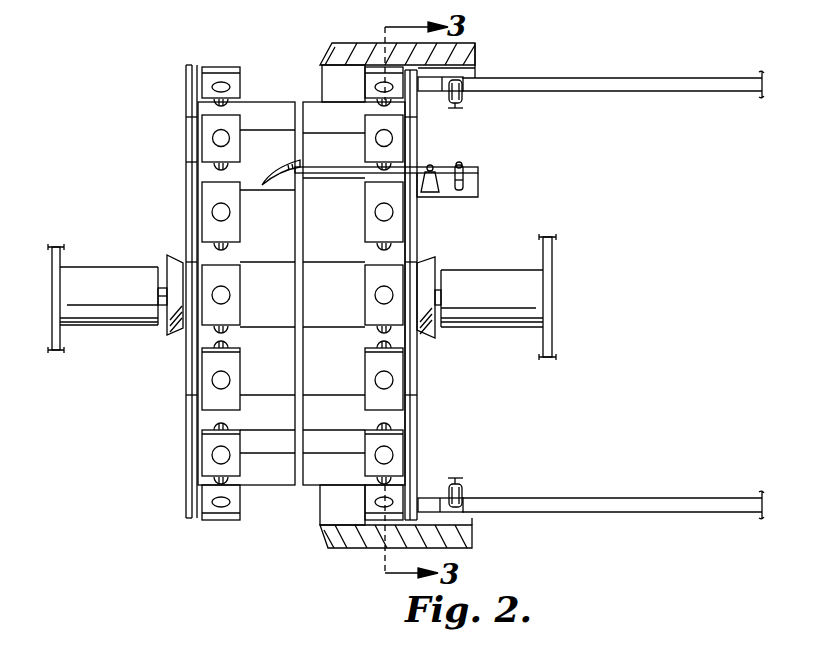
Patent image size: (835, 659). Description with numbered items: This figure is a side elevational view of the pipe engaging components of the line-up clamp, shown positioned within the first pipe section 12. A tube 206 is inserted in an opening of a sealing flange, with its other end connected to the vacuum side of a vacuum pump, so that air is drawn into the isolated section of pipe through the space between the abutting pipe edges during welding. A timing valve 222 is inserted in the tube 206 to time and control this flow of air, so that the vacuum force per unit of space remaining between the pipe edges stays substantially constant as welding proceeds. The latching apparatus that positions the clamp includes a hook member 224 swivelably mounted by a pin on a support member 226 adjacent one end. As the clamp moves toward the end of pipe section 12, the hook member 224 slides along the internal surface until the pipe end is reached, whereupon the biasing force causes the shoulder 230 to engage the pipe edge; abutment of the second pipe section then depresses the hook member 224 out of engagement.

The first pipe section 12 is at (358, 548).
The tube 206 is at (546, 78).
The timing valve 222 is at (462, 101).
The hook member 224 is at (286, 163).
The support member 226 is at (430, 194).
The shoulder 230 is at (302, 166).